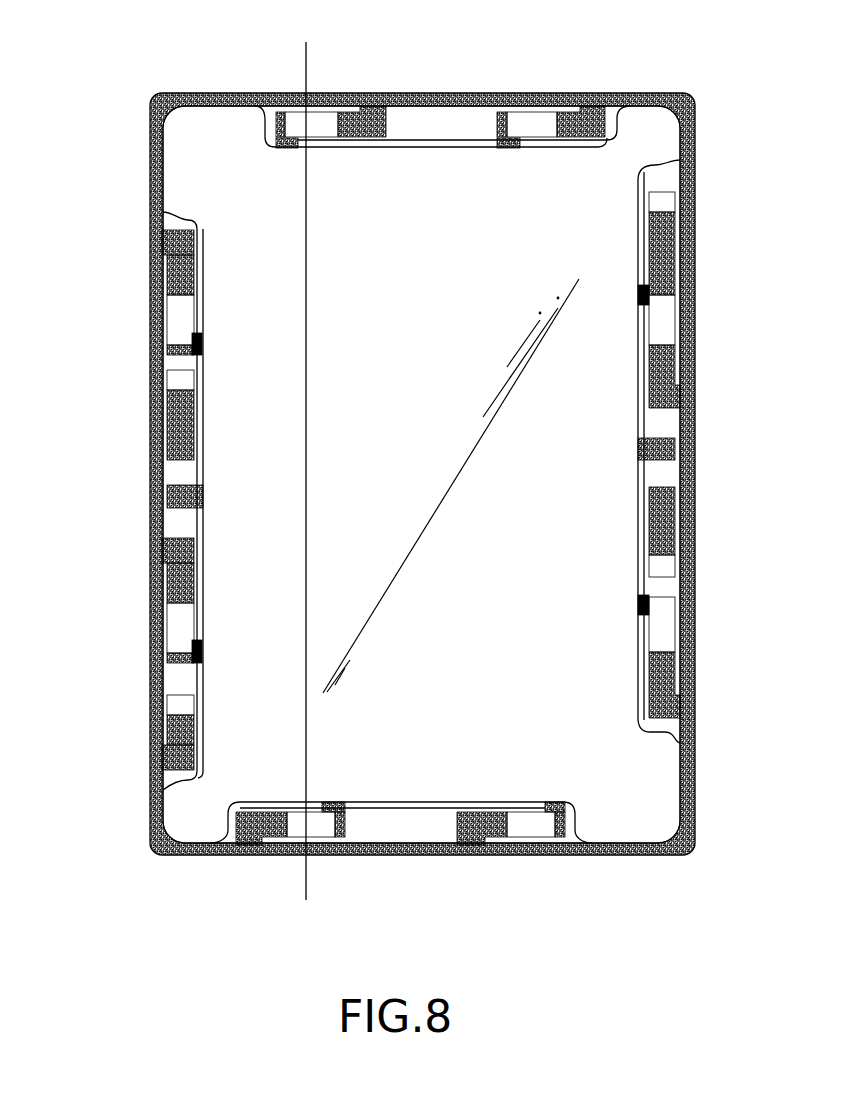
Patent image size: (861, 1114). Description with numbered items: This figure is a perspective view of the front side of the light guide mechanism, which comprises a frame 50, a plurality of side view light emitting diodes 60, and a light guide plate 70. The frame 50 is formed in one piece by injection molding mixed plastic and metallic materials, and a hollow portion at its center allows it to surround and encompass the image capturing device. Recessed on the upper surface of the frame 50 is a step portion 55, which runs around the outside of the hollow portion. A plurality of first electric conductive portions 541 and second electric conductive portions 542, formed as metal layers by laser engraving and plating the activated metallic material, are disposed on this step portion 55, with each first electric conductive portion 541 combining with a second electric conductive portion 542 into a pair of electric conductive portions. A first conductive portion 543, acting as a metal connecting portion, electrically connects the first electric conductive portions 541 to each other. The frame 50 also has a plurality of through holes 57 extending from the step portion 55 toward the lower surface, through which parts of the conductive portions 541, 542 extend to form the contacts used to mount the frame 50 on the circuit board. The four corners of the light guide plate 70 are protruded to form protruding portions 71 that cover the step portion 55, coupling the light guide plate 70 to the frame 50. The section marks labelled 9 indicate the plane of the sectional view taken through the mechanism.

The frame 50 is at (582, 855).
The step portion 55 is at (425, 825).
The through hole 57 is at (173, 383).
The side view light emitting diode 60 is at (178, 323).
The light guide plate 70 is at (232, 678).
The protruding portion 71 is at (200, 158).
The first electric conductive portion 541 is at (178, 275).
The second electric conductive portion 542 is at (175, 347).
The first conductive portion 543 is at (200, 100).
The section line 9- 9 is at (297, 53).